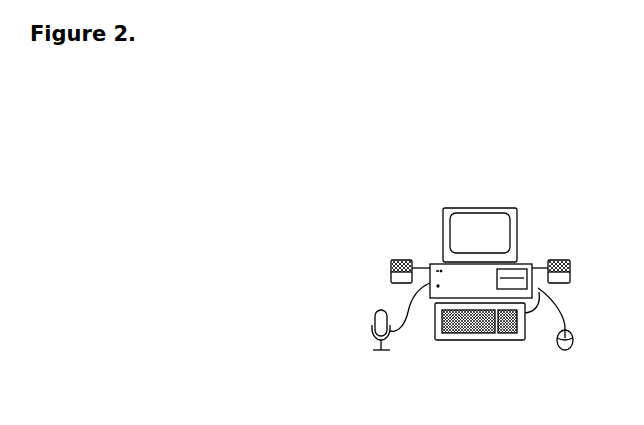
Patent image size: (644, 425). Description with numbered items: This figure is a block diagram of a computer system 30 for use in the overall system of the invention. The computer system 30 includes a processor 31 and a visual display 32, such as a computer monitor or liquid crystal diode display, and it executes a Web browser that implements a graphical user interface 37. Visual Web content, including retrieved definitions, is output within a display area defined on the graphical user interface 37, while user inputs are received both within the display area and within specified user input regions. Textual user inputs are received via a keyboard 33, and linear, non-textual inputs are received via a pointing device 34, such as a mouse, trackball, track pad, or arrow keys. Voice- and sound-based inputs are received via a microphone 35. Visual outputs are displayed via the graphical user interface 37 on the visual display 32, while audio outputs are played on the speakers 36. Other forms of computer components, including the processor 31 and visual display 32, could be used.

The computer system 30 is at (460, 174).
The processor 31 is at (430, 276).
The visual display 32 is at (441, 220).
The keyboard 33 is at (457, 341).
The pointing device 34 is at (571, 351).
The microphone 35 is at (371, 329).
The speakers 36 is at (402, 259).
The graphical user interface 37 is at (501, 219).